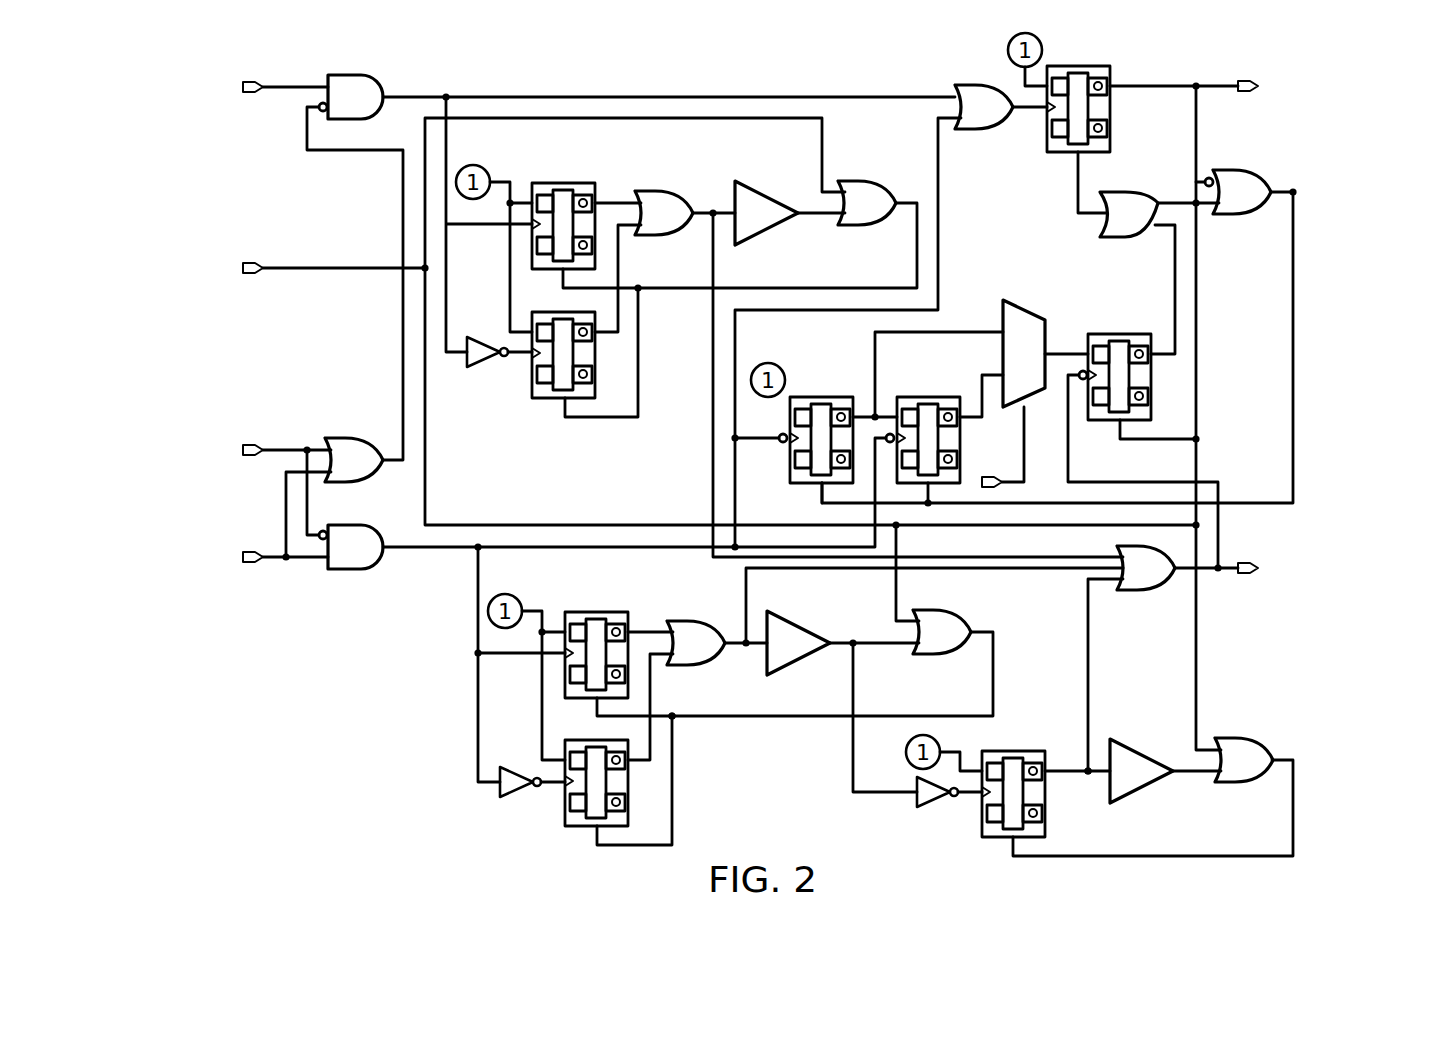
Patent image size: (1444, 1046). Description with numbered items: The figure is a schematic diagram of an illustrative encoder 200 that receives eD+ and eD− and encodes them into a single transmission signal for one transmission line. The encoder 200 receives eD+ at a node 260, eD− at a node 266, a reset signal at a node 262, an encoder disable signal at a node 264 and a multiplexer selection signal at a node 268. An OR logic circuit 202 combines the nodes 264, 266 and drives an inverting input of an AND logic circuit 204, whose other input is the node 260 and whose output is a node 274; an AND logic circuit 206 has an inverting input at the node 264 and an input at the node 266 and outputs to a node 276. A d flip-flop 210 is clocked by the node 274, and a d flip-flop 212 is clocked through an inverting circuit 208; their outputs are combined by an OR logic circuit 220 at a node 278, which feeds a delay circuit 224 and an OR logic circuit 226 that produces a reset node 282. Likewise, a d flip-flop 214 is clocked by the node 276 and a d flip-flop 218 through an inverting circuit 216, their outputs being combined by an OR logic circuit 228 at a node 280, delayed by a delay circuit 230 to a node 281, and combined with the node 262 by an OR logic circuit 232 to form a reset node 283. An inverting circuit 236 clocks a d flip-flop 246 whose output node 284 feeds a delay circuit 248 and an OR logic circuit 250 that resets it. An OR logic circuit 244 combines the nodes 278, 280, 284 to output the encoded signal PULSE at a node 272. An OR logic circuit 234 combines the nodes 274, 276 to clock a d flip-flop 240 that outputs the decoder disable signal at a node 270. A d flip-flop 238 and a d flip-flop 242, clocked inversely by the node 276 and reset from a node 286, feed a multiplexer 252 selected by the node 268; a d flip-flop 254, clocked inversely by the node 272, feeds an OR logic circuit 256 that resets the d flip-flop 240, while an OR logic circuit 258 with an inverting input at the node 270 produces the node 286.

The encoder 200 is at (268, 798).
The OR logic circuit 202 is at (350, 438).
The AND logic circuit 204 is at (352, 75).
The AND logic circuit 206 is at (355, 570).
The inverting circuit 208 is at (485, 368).
The d flip-flop 210 is at (555, 183).
The d flip-flop 212 is at (557, 398).
The d flip-flop 214 is at (585, 612).
The inverting circuit 216 is at (515, 797).
The d flip-flop 218 is at (590, 826).
The OR logic circuit 220 is at (660, 192).
The delay circuit 224 is at (768, 198).
The OR logic circuit 226 is at (862, 182).
The OR logic circuit 228 is at (685, 622).
The delay circuit 230 is at (805, 628).
The OR logic circuit 232 is at (940, 653).
The OR logic circuit 234 is at (985, 130).
The inverting circuit 236 is at (937, 807).
The d flip-flop 238 is at (835, 397).
The d flip-flop 240 is at (1090, 66).
The d flip-flop 242 is at (920, 397).
The OR logic circuit 244 is at (1140, 592).
The d flip-flop 246 is at (1005, 837).
The delay circuit 248 is at (1148, 757).
The OR logic circuit 250 is at (1240, 783).
The multiplexer 252 is at (1065, 297).
The d flip-flop 254 is at (1128, 334).
The OR logic circuit 256 is at (1130, 192).
The OR logic circuit 258 is at (1240, 170).
The node 260 is at (253, 80).
The node 262 is at (253, 262).
The node 264 is at (253, 457).
The node 266 is at (253, 565).
The node 268 is at (992, 477).
The node 270 is at (1245, 80).
The node 272 is at (1248, 576).
The node 274 is at (446, 95).
The node 276 is at (475, 550).
The node 278 is at (713, 211).
The node 280 is at (746, 650).
The node 281 is at (858, 648).
The node 282 is at (642, 291).
The node 283 is at (678, 720).
The node 284 is at (1088, 778).
The node 286 is at (1297, 190).